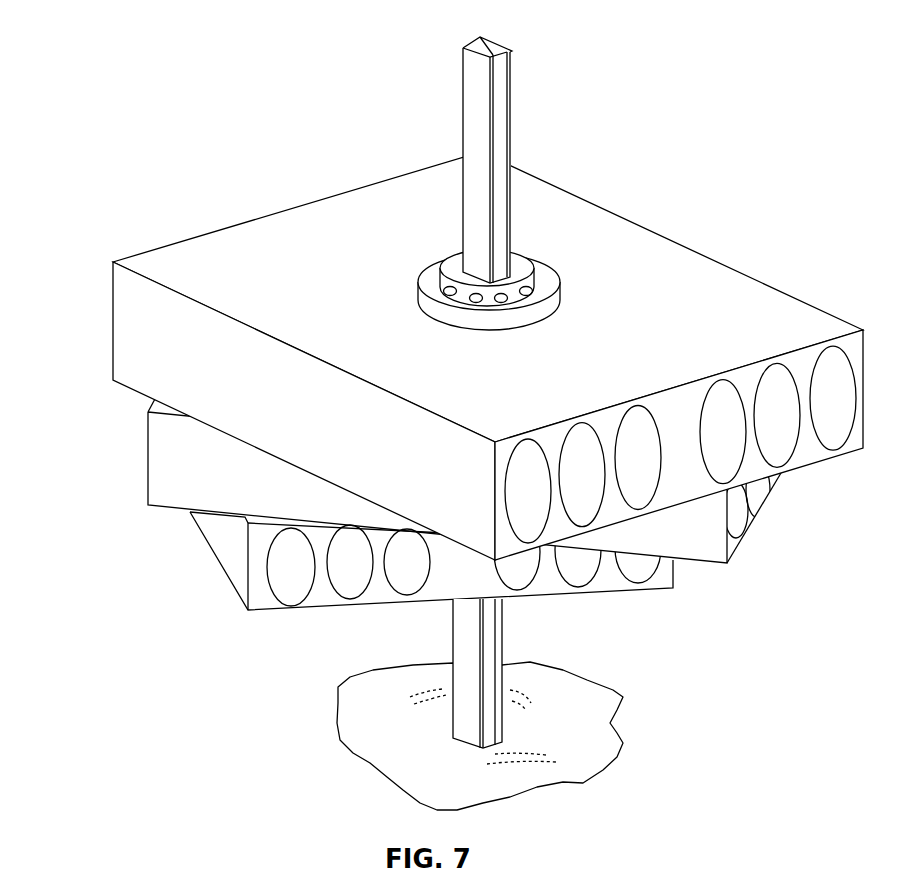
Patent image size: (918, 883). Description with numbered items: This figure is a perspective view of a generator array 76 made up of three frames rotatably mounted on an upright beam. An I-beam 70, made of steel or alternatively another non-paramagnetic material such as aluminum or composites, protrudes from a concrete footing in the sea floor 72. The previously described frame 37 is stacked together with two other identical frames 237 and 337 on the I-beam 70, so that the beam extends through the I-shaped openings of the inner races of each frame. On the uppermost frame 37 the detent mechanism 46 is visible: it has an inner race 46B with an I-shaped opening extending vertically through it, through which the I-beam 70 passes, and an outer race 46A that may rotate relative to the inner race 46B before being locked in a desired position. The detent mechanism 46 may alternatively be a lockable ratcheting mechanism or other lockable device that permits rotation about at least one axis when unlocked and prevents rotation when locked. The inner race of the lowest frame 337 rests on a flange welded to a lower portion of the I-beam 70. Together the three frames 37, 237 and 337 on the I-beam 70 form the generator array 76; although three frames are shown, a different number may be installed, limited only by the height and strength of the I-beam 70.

The generator array 76 is at (172, 76).
The frame 37 is at (91, 334).
The frame 237 is at (112, 462).
The frame 337 is at (192, 551).
The detent mechanism 46 is at (406, 284).
The outer race 46A is at (552, 284).
The inner race 46B is at (522, 265).
The I-beam 70 is at (513, 100).
The sea floor 72 is at (569, 738).